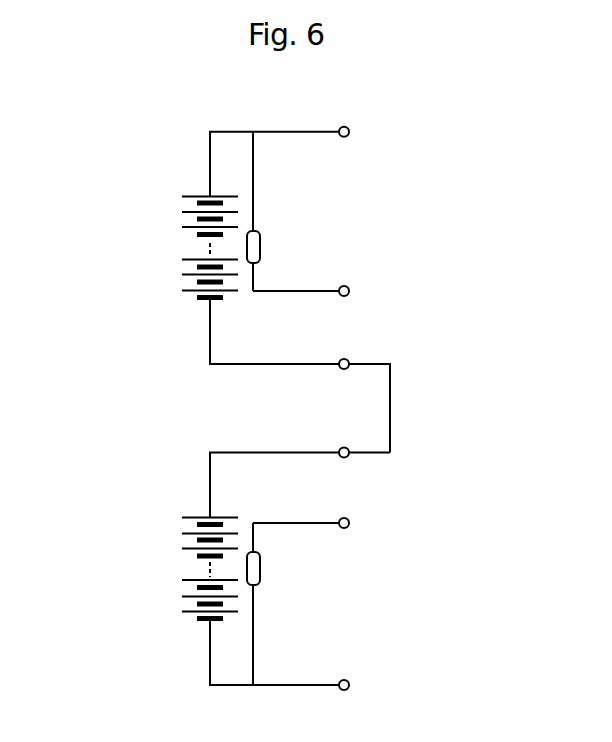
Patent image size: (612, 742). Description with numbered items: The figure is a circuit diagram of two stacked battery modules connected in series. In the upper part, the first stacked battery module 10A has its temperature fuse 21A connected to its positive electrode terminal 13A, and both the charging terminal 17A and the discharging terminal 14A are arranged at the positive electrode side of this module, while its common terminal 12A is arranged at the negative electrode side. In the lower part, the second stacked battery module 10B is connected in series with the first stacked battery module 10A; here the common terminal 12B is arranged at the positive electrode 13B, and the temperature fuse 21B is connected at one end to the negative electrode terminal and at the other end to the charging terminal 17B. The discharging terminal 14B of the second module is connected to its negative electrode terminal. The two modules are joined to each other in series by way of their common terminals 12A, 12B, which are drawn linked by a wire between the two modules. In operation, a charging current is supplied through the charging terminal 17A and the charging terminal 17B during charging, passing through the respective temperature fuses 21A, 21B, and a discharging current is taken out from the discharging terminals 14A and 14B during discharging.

The first stacked battery module 10A is at (163, 229).
The second stacked battery module 10B is at (156, 573).
The common terminal 12A is at (348, 352).
The common terminal 12B is at (353, 463).
The positive electrode terminal 13A is at (205, 172).
The positive electrode 13B is at (205, 508).
The discharging terminal 14A is at (358, 130).
The discharging terminal 14B is at (350, 685).
The charging terminal 17A is at (357, 290).
The charging terminal 17B is at (350, 525).
The temperature fuse 21A is at (263, 242).
The temperature fuse 21B is at (263, 571).